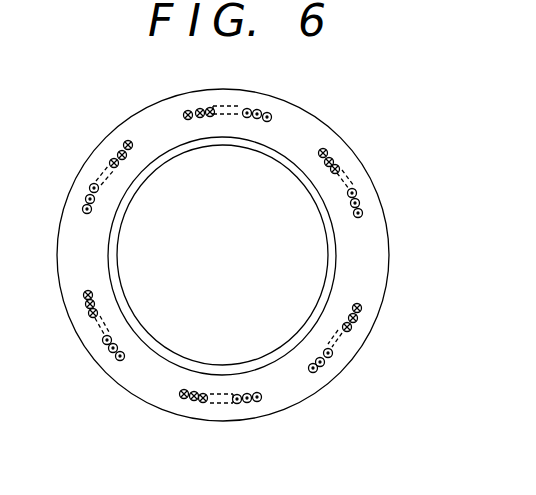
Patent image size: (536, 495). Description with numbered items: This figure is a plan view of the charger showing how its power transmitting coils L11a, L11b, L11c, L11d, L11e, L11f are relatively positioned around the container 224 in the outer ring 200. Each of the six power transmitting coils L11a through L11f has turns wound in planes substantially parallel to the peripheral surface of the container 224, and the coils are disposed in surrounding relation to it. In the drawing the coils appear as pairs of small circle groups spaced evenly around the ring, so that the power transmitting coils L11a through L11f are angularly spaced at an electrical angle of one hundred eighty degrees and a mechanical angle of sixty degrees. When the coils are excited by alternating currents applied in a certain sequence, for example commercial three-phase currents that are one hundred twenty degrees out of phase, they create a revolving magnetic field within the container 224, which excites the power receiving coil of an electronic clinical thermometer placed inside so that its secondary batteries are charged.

The light emitting device / ring unit 200 is at (323, 118).
The container 224 is at (333, 262).
The power transmitting coil L11a is at (230, 103).
The power transmitting coil L11b is at (102, 161).
The power transmitting coil L11c is at (88, 332).
The power transmitting coil L11d is at (220, 409).
The power transmitting coil L11e is at (350, 343).
The power transmitting coil L11f is at (355, 171).